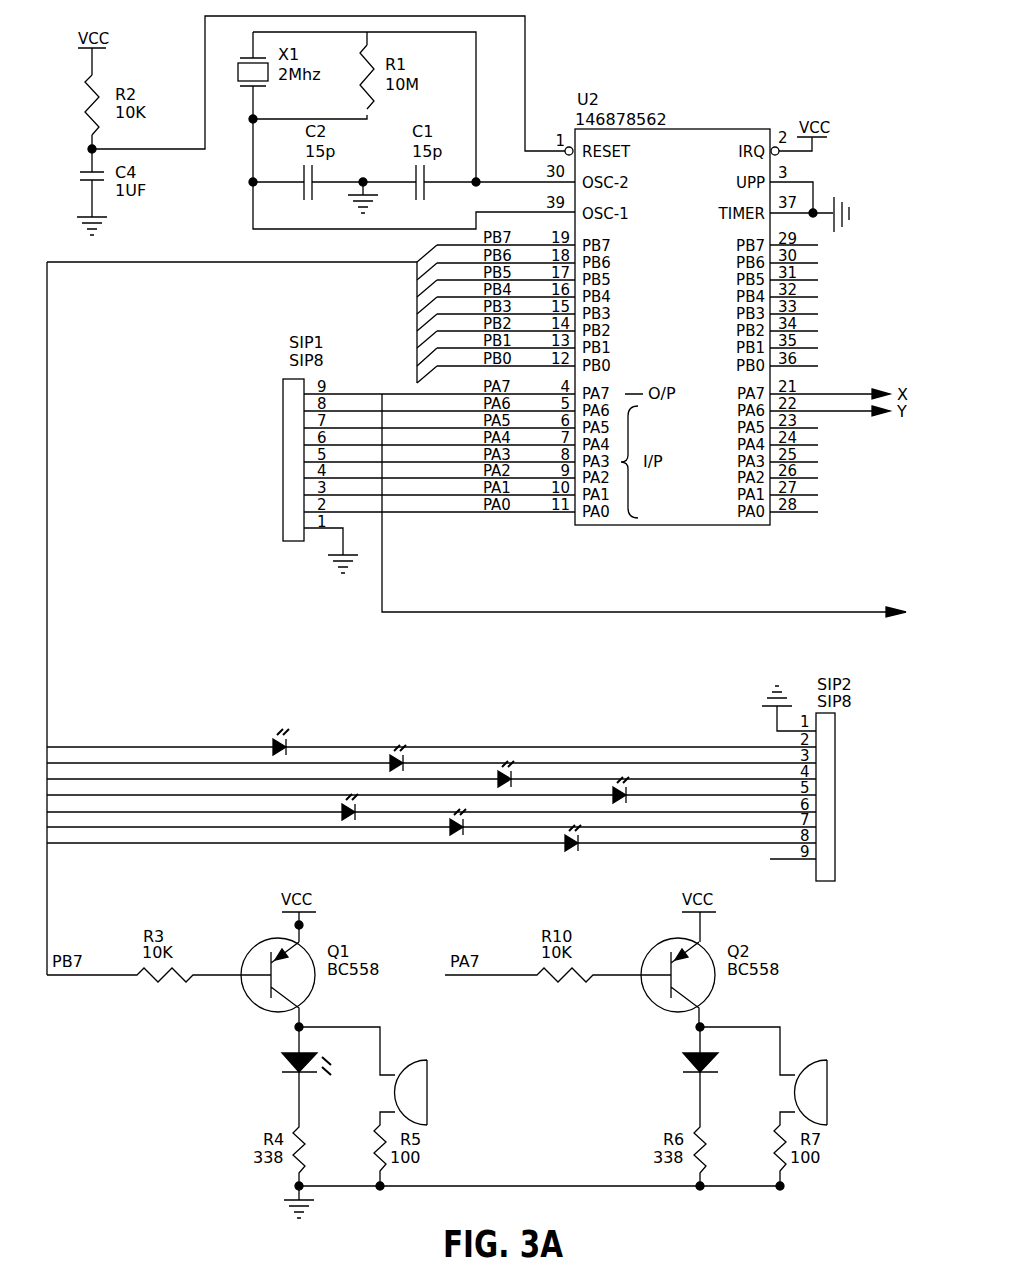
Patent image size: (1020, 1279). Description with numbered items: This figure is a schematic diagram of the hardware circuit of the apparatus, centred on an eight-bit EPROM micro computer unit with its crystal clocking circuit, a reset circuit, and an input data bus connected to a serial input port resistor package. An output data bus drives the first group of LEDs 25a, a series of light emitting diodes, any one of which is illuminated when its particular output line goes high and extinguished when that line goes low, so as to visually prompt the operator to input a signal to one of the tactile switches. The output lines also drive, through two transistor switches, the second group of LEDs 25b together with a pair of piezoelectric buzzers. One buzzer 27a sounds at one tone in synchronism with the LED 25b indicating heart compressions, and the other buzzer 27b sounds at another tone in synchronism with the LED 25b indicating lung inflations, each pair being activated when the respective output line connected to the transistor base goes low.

The first group of LEDs 25a is at (166, 722).
The second group of LEDs 25b is at (258, 1102).
The heart compression buzzer 27a is at (366, 1098).
The lung inflation buzzer 27b is at (842, 1104).